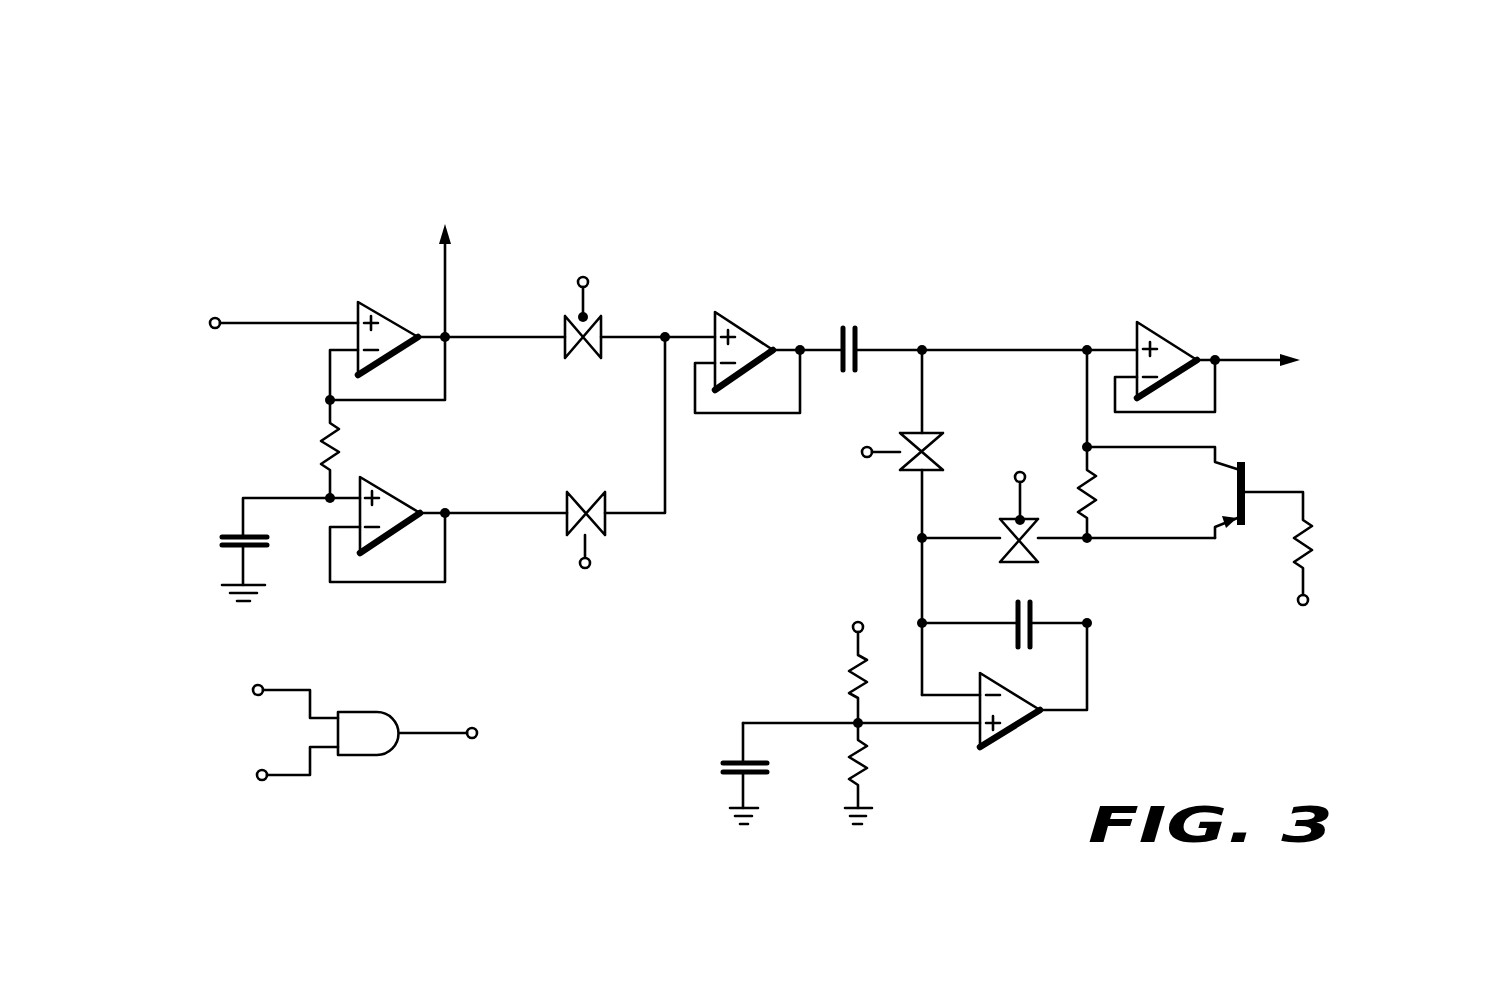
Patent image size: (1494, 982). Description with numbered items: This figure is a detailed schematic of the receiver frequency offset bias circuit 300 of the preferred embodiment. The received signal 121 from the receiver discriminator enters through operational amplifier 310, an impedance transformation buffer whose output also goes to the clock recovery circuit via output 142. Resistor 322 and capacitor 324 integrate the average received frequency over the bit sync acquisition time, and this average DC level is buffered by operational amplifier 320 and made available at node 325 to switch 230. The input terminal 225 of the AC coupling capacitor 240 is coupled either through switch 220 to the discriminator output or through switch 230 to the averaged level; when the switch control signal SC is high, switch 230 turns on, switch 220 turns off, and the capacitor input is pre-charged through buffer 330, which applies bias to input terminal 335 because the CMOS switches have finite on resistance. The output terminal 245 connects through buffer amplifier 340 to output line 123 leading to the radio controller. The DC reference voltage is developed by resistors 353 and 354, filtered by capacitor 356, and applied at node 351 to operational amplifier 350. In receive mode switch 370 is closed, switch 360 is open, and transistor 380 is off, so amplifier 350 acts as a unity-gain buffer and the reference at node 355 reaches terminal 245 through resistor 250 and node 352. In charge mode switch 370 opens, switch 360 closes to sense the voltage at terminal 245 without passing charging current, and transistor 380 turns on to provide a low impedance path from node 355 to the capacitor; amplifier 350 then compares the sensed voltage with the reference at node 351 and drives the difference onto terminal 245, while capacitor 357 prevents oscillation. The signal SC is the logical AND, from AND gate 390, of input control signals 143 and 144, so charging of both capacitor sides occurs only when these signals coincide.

The received signal 121 is at (277, 318).
The operational amplifier 310 is at (386, 311).
The output 142 is at (446, 286).
The resistor 322 is at (322, 442).
The capacitor 324 is at (221, 541).
The operational amplifier 320 is at (395, 498).
The node 325 is at (447, 511).
The switch 220 is at (565, 318).
The switch 230 is at (606, 492).
The input terminal 225 is at (667, 332).
The operational amplifier 330 is at (728, 323).
The input terminal 335 is at (801, 346).
The AC coupling capacitor 240 is at (855, 326).
The output terminal 245 is at (925, 347).
The operational amplifier 340 is at (1166, 343).
The output line 123 is at (1256, 365).
The switch 360 is at (945, 437).
The switch 370 is at (1000, 519).
The resistor 250 is at (1094, 481).
The transistor 380 is at (1248, 462).
The node 352 is at (919, 538).
The node 355 is at (1092, 543).
The capacitor 357 is at (1013, 606).
The operational amplifier 350 is at (1025, 722).
The node 351 is at (905, 725).
The resistor 353 is at (850, 676).
The resistor 354 is at (850, 760).
The capacitor 356 is at (724, 760).
The AND gate 390 is at (378, 710).
The input control signal 144 is at (320, 674).
The input control signal 143 is at (310, 775).
The receiver frequency offset bias circuit 300 is at (767, 482).